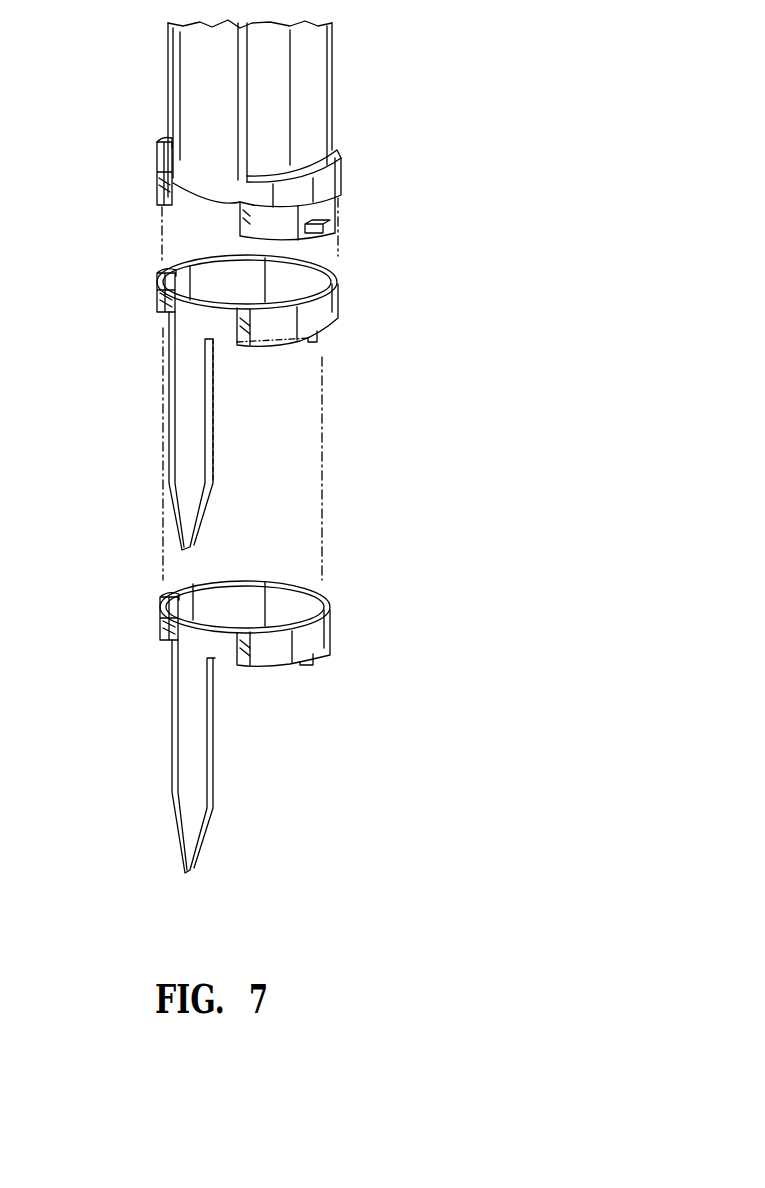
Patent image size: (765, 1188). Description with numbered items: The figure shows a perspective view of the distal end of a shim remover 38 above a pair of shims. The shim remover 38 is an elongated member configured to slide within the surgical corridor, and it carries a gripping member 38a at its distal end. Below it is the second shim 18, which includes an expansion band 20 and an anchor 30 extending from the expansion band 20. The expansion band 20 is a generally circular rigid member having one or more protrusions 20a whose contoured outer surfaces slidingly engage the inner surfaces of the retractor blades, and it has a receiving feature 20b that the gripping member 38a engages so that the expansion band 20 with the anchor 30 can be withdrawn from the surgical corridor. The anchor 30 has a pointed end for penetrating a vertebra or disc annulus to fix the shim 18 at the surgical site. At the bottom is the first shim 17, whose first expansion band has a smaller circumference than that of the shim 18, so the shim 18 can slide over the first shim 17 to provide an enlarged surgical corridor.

The shim remover 38 is at (358, 105).
The gripping member 38a is at (330, 240).
The expansion band 20 is at (250, 340).
The protrusion 20a is at (150, 291).
The receiving feature 20b is at (312, 347).
The shim 18 is at (437, 308).
The anchor 30 is at (157, 419).
The first shim 17 is at (380, 637).